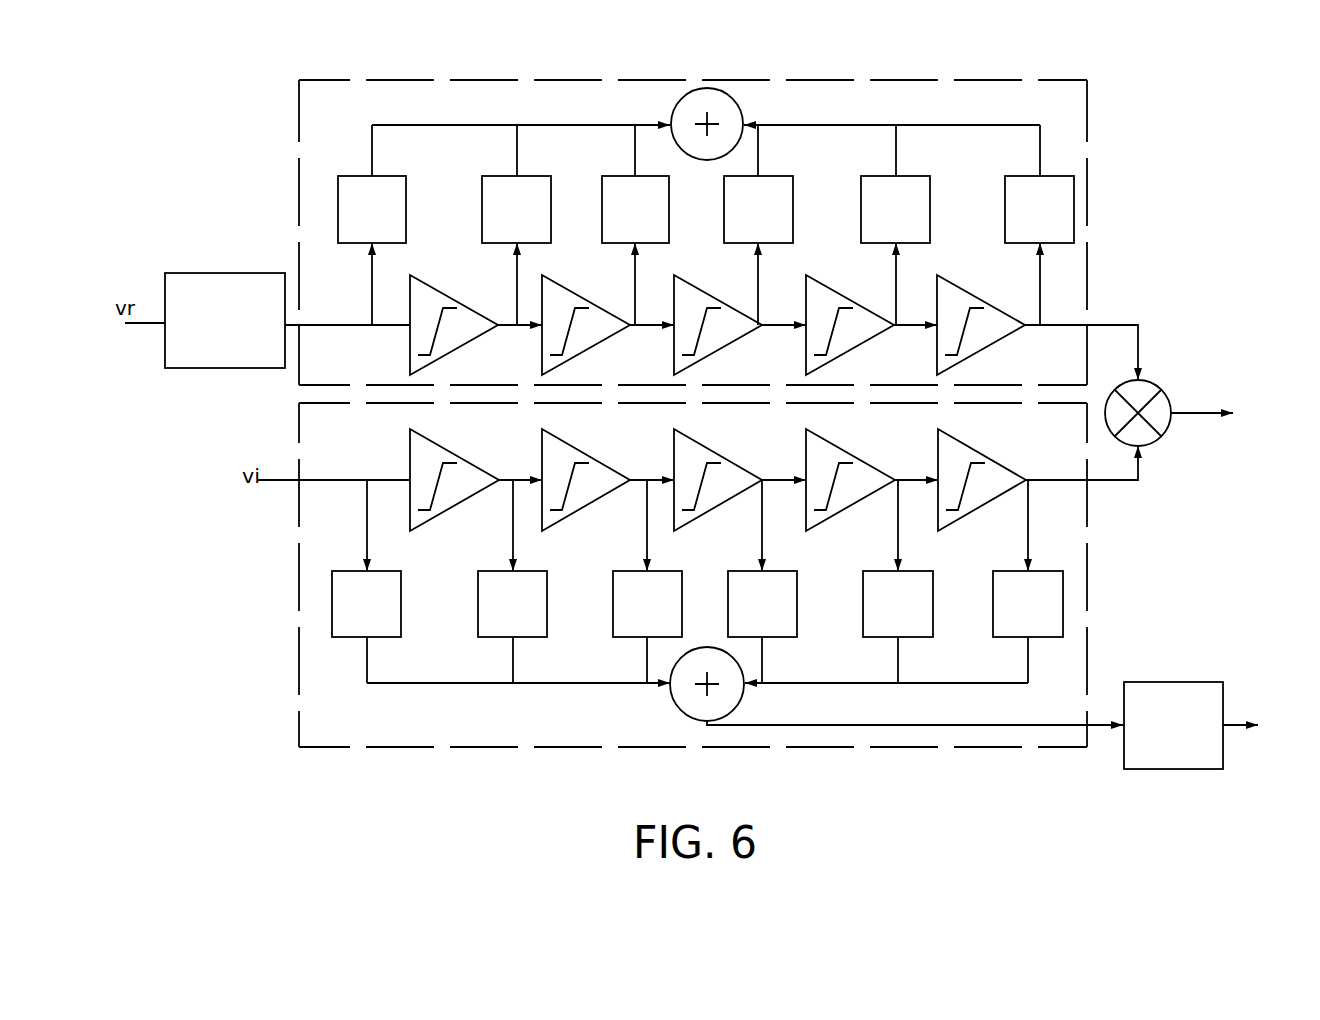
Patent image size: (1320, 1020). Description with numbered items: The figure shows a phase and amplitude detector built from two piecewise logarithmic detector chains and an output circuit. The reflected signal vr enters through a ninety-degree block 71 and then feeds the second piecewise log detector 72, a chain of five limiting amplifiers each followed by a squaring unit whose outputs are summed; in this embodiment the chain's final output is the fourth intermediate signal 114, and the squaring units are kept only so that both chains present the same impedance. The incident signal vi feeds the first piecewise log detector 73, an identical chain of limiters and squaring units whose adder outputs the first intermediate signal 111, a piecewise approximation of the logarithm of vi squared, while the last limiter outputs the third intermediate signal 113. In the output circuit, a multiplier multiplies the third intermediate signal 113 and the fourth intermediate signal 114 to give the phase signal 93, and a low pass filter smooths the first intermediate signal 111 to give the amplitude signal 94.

The 90 degree phase shifter 71 is at (225, 273).
The second piecewise log detector 72 is at (1087, 115).
The first piecewise log detector 73 is at (726, 747).
The phase signal 93 is at (1216, 423).
The amplitude signal 94 is at (1259, 736).
The first intermediate signal 111 is at (1013, 722).
The third intermediate signal 113 is at (1108, 481).
The fourth intermediate signal 114 is at (1108, 326).